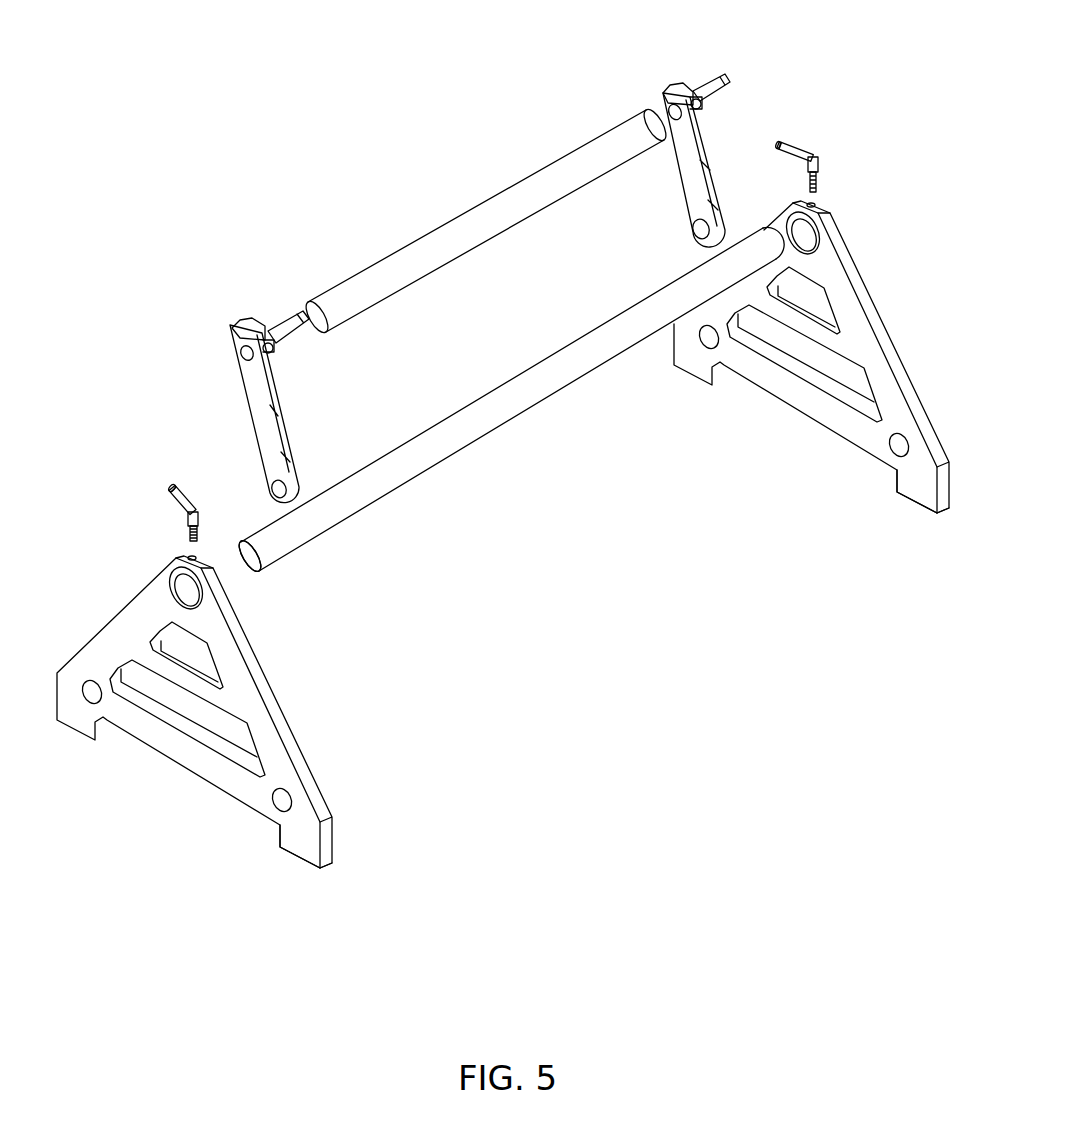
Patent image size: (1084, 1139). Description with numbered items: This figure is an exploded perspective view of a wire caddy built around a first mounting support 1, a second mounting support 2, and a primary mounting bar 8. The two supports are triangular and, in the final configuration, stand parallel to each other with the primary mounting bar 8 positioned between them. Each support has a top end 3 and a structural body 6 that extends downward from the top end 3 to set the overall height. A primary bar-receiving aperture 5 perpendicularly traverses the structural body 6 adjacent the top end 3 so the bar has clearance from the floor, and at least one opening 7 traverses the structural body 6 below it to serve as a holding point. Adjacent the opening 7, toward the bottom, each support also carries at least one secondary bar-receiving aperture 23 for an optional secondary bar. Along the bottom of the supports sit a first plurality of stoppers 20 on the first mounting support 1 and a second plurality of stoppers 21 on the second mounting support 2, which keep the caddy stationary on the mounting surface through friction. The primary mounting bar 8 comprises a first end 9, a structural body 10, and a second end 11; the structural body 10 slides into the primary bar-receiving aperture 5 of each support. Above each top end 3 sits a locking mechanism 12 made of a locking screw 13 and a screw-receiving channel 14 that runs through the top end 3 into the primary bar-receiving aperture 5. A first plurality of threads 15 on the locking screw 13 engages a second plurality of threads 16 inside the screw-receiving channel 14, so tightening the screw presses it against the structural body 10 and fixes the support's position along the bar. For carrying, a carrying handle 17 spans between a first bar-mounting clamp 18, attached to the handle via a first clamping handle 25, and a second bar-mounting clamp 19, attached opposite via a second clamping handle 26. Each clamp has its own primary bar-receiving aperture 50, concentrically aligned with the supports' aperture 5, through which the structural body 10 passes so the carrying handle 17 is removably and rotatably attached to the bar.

The first mounting support 1 is at (398, 728).
The second mounting support 2 is at (798, 512).
The top end 3 is at (215, 568).
The primary bar-receiving aperture 5 is at (193, 597).
The structural body 6 is at (260, 718).
The opening 7 is at (167, 639).
The primary mounting bar 8 is at (488, 308).
The first end 9 is at (258, 571).
The structural body 10 is at (545, 363).
The second end 11 is at (762, 236).
The locking mechanism 12 is at (498, 309).
The locking screw 13 is at (780, 142).
The screw-receiving channel 14 is at (816, 204).
The first plurality of threads 15 is at (812, 156).
The second plurality of threads 16 is at (808, 196).
The carrying handle 17 is at (478, 208).
The first bar-mounting clamp 18 is at (232, 328).
The second bar-mounting clamp 19 is at (672, 88).
The first plurality of stoppers 20 is at (318, 872).
The second plurality of stoppers 21 is at (937, 514).
The secondary bar-receiving aperture 23 is at (91, 692).
The first clamping handle 25 is at (290, 340).
The second clamping handle 26 is at (727, 76).
The primary bar-receiving aperture 50 is at (274, 492).